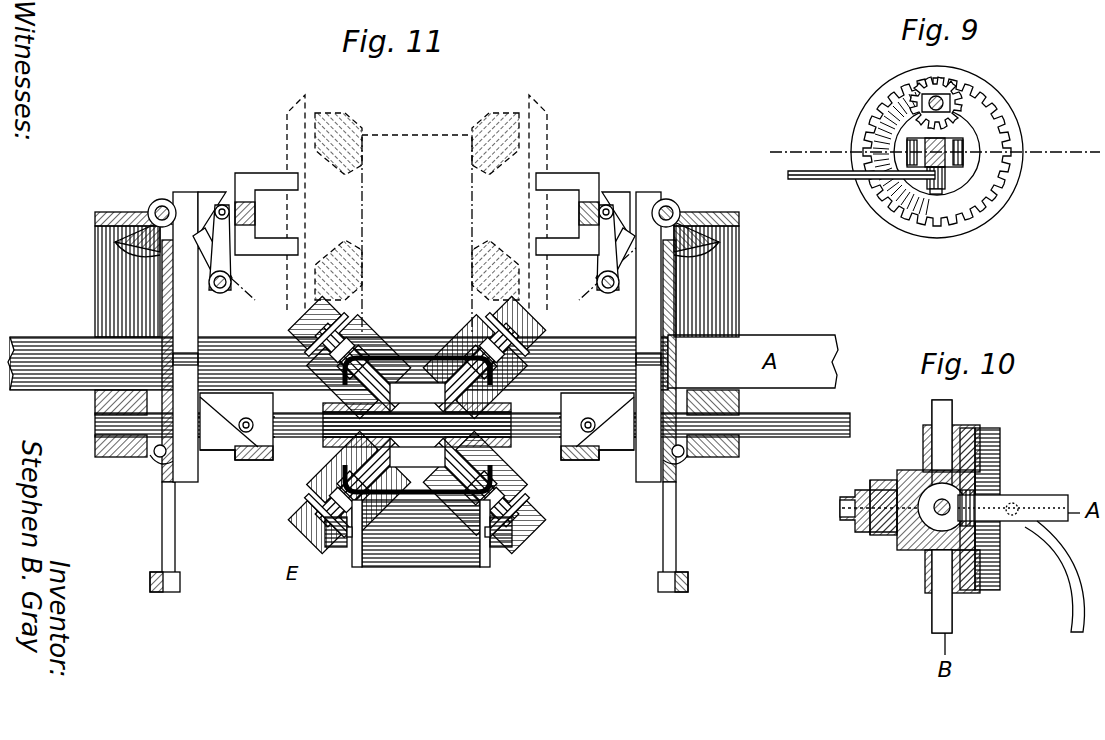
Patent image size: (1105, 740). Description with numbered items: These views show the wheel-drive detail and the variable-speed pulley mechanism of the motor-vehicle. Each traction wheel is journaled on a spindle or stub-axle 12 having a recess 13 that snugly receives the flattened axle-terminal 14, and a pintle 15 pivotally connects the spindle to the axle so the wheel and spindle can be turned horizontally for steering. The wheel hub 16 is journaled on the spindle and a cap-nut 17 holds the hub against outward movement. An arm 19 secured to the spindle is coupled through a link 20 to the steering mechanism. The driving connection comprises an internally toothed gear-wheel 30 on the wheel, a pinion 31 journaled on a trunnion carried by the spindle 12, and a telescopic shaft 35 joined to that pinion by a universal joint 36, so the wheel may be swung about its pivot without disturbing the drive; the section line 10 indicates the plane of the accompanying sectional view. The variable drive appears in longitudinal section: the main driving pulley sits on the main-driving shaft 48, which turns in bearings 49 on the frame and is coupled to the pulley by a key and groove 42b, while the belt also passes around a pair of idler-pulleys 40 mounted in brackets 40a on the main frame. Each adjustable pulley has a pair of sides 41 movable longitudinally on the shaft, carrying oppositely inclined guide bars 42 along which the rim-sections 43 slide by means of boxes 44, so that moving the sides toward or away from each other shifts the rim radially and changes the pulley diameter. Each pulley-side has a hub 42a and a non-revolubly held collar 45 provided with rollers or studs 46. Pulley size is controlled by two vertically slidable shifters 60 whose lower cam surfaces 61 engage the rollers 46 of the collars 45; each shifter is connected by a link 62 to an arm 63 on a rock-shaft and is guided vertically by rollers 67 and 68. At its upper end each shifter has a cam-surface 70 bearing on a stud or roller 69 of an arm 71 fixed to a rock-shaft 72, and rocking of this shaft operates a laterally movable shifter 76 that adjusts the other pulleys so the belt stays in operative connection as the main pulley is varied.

In FIG. 9, the section line 10 is at (924, 161).
In FIG. 9, the spindle or stub-axle 12 is at (968, 136).
In FIG. 10, the spindle or stub-axle 12 is at (880, 492).
In FIG. 10, the recess 13 is at (985, 540).
In FIG. 10, the axle-terminal 14 is at (928, 527).
In FIG. 10, the pintle 15 is at (938, 500).
In FIG. 10, the hub 16 is at (870, 532).
In FIG. 10, the cap-nut 17 is at (840, 513).
In FIG. 9, the arm 19 is at (948, 182).
In FIG. 10, the arm 19 is at (1015, 503).
In FIG. 10, the link 20 is at (1055, 592).
In FIG. 9, the gear-wheel 30 is at (985, 220).
In FIG. 10, the gear-wheel 30 is at (990, 593).
In FIG. 9, the pinion 31 is at (965, 100).
In FIG. 9, the shaft 35 is at (895, 96).
In FIG. 9, the universal joint 36 is at (950, 84).
In FIG. 11, the guide or idler-pulleys 40 is at (425, 567).
In FIG. 11, the brackets 40a is at (338, 548).
In FIG. 11, the pulley-sides 41 is at (288, 528).
In FIG. 11, the inclined guide bars 42 is at (290, 505).
In FIG. 11, the hub 42a is at (455, 395).
In FIG. 11, the key and groove 42b is at (420, 427).
In FIG. 11, the rim-sections 43 is at (390, 358).
In FIG. 11, the boxes 44 is at (292, 478).
In FIG. 11, the collar 45 is at (232, 462).
In FIG. 11, the rollers or studs 46 is at (246, 418).
In FIG. 11, the main-driving shaft 48 is at (768, 437).
In FIG. 11, the bearings 49 is at (118, 457).
In FIG. 11, the shifters 60 is at (190, 318).
In FIG. 11, the cam surface 61 is at (230, 418).
In FIG. 11, the link or bar 62 is at (162, 540).
In FIG. 11, the arm 63 is at (158, 592).
In FIG. 11, the roller 67 is at (158, 200).
In FIG. 11, the roller 68 is at (158, 458).
In FIG. 11, the stud or roller 69 is at (228, 205).
In FIG. 11, the cam-surface 70 is at (205, 215).
In FIG. 11, the arm 71 is at (228, 262).
In FIG. 11, the rock-shaft 72 is at (232, 290).
In FIG. 11, the shifter 76 is at (245, 205).